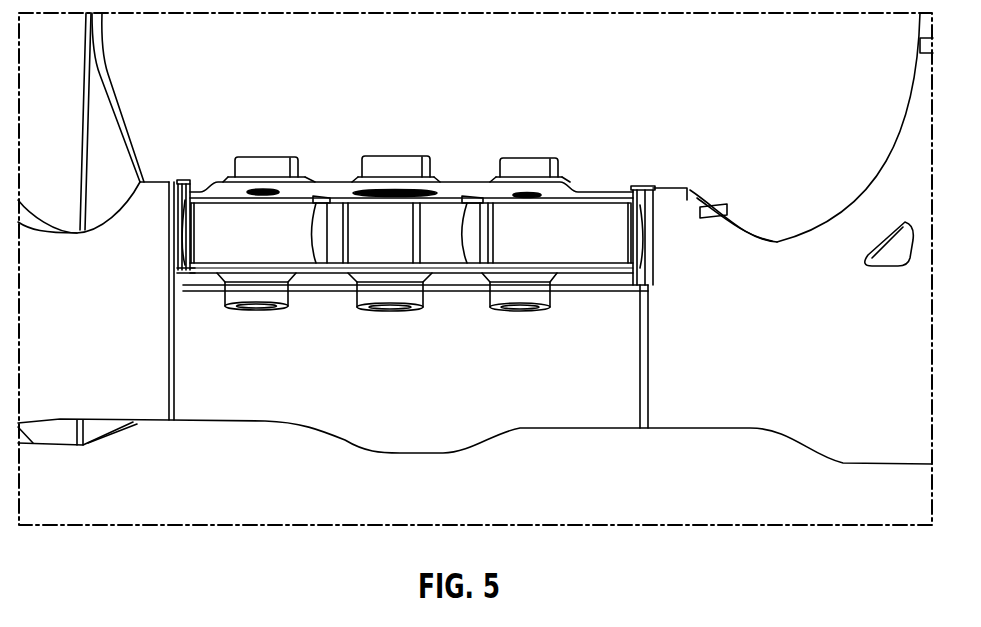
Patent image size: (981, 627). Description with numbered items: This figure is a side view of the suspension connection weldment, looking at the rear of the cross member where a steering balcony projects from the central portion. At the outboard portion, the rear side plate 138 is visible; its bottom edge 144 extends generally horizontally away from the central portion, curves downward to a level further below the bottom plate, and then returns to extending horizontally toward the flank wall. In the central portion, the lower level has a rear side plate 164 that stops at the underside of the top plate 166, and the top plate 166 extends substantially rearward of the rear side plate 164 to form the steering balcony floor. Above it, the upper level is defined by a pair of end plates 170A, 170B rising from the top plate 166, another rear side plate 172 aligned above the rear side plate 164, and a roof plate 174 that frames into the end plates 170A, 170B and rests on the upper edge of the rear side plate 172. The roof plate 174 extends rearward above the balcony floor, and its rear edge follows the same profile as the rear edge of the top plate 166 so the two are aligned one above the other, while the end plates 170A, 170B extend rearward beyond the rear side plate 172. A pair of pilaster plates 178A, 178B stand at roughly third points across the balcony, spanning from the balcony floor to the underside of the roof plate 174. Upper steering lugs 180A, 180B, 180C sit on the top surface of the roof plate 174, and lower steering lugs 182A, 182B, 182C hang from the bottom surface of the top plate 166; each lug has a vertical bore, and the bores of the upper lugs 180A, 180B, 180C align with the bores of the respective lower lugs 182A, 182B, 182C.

The rear side plate 138 is at (764, 273).
The bottom edge 144 is at (748, 430).
The rear side plate 164 is at (548, 395).
The top plate 166 is at (460, 287).
The end plate 170A is at (638, 187).
The end plate 170B is at (190, 181).
The rear side plate 172 is at (580, 247).
The roof plate 174 is at (462, 186).
The pilaster plate 178A is at (480, 237).
The pilaster plate 178B is at (313, 234).
The upper steering lug 180A is at (535, 164).
The upper steering lug 180B is at (397, 166).
The upper steering lug 180C is at (267, 163).
The lower steering lug 182A is at (553, 298).
The lower steering lug 182B is at (385, 310).
The lower steering lug 182C is at (243, 289).